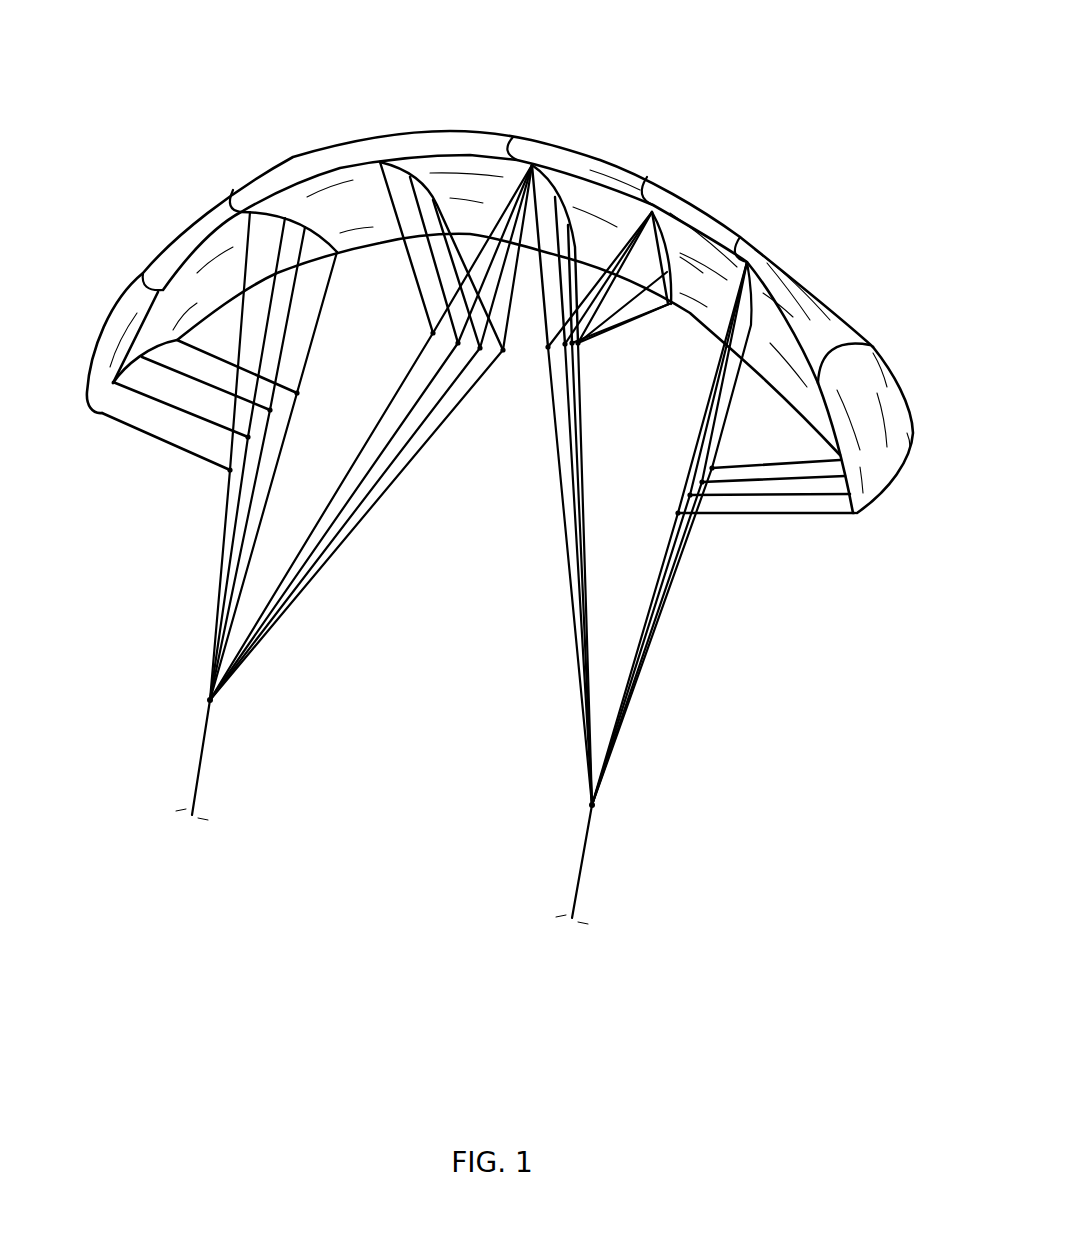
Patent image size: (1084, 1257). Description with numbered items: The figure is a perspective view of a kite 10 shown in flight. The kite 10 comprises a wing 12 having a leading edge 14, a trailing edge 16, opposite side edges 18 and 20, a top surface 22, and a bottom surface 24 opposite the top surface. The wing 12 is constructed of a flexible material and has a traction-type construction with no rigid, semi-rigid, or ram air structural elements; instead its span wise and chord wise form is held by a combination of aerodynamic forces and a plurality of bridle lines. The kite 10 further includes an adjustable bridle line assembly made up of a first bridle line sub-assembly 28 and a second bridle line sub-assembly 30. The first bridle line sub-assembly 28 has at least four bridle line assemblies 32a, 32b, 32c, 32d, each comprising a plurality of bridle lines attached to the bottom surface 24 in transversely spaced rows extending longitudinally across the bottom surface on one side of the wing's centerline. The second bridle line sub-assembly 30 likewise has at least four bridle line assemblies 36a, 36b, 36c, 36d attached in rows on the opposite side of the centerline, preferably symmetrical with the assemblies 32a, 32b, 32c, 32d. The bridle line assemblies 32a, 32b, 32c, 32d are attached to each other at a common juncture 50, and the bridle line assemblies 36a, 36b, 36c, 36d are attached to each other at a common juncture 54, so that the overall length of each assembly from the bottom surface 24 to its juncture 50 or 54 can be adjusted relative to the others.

The kite 10 is at (754, 78).
The wing 12 is at (905, 372).
The leading edge 14 is at (310, 153).
The trailing edge 16 is at (710, 322).
The side edge 18 is at (102, 410).
The side edge 20 is at (893, 490).
The top surface 22 is at (815, 280).
The bottom surface 24 is at (375, 240).
The first bridle line sub-assembly 28 is at (172, 568).
The second bridle line sub-assembly 30 is at (690, 683).
The bridle line assembly 32a is at (291, 574).
The bridle line assembly 32b is at (314, 557).
The bridle line assembly 32c is at (361, 506).
The bridle line assembly 32d is at (421, 453).
The bridle line assembly 36a is at (572, 620).
The bridle line assembly 36b is at (578, 573).
The bridle line assembly 36c is at (576, 437).
The bridle line assembly 36d is at (581, 452).
The common juncture 50 is at (207, 703).
The common juncture 54 is at (596, 808).